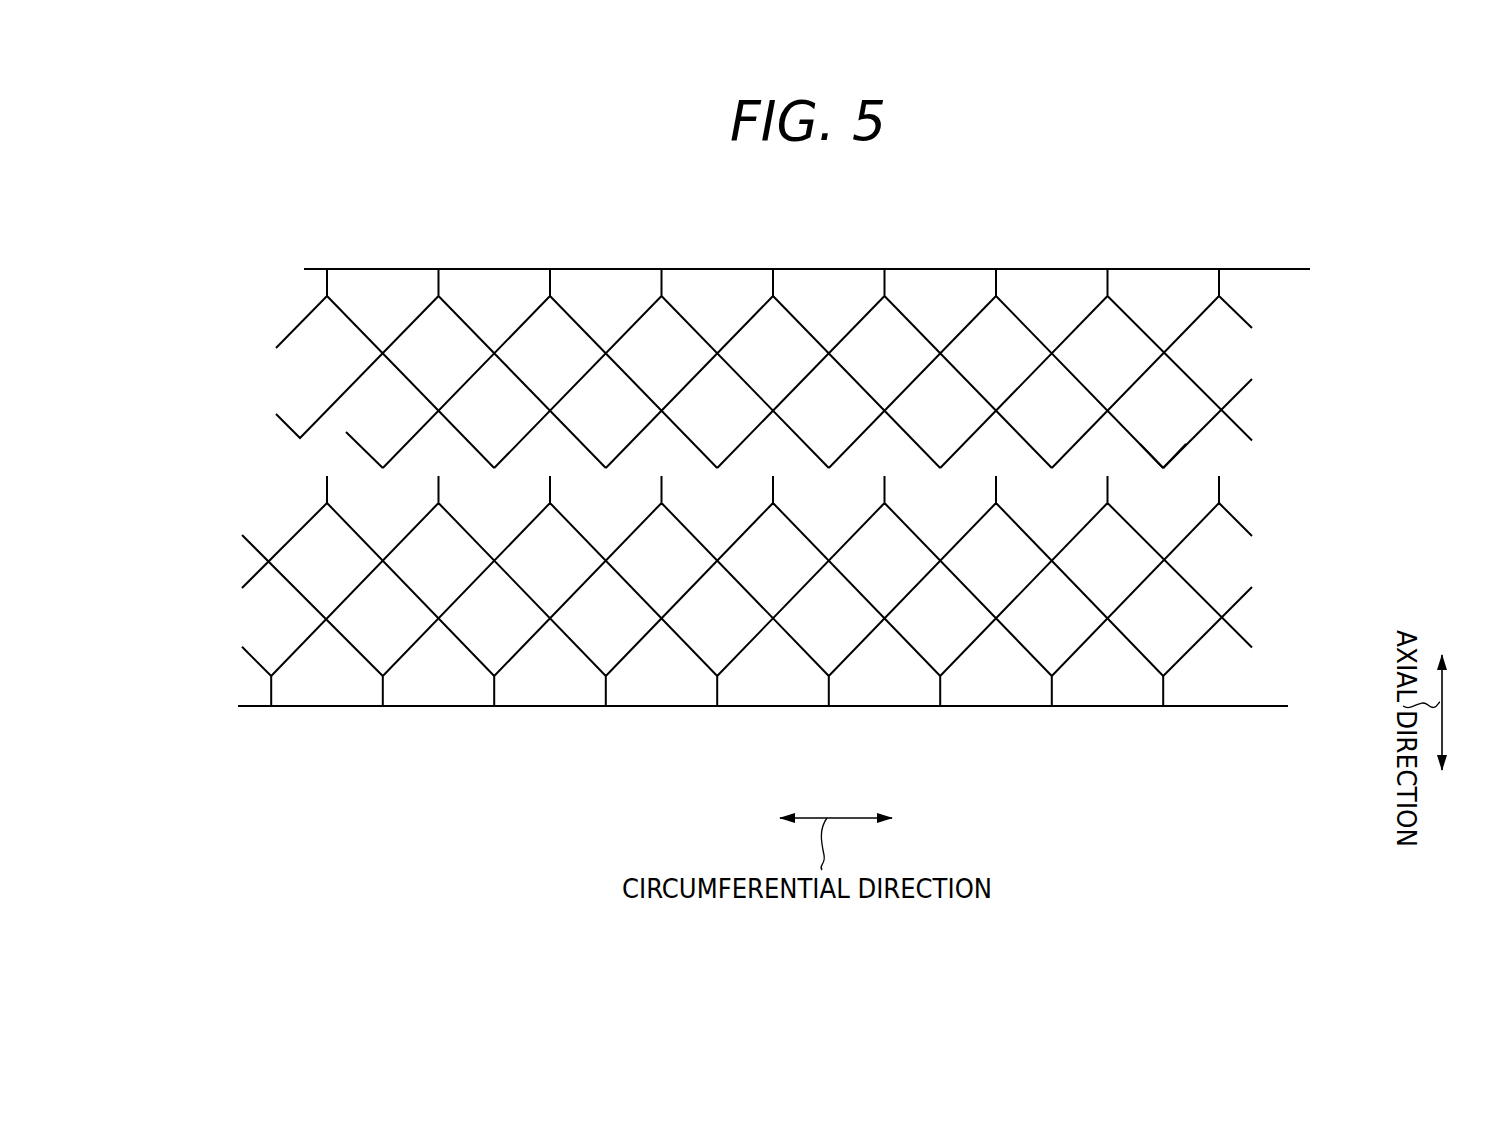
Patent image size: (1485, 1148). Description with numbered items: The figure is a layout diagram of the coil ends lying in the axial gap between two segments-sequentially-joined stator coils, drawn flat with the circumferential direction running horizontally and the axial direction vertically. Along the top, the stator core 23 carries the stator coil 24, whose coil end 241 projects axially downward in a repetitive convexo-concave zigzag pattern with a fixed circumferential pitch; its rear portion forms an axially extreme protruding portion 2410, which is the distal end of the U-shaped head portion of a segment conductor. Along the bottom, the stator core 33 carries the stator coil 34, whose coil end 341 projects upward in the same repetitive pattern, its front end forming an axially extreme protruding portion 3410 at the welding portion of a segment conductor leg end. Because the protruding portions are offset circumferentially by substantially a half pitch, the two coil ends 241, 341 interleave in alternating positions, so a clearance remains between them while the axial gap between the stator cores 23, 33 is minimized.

The stator core 23 is at (333, 194).
The stator coil 24 is at (1232, 362).
The coil end 241 is at (236, 370).
The axially extreme protruding portion 2410 is at (1165, 469).
The stator coil 34 is at (1325, 489).
The coil end 341 is at (234, 604).
The axially extreme protruding portion 3410 is at (1222, 485).
The stator core 33 is at (322, 747).